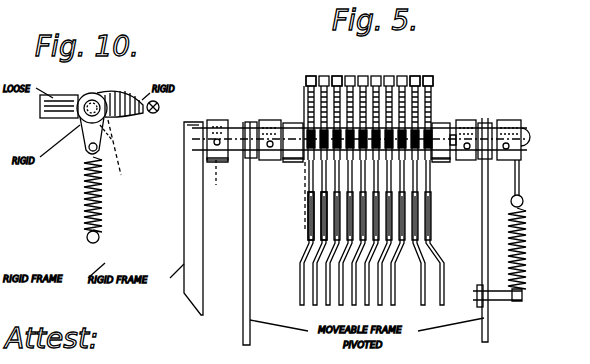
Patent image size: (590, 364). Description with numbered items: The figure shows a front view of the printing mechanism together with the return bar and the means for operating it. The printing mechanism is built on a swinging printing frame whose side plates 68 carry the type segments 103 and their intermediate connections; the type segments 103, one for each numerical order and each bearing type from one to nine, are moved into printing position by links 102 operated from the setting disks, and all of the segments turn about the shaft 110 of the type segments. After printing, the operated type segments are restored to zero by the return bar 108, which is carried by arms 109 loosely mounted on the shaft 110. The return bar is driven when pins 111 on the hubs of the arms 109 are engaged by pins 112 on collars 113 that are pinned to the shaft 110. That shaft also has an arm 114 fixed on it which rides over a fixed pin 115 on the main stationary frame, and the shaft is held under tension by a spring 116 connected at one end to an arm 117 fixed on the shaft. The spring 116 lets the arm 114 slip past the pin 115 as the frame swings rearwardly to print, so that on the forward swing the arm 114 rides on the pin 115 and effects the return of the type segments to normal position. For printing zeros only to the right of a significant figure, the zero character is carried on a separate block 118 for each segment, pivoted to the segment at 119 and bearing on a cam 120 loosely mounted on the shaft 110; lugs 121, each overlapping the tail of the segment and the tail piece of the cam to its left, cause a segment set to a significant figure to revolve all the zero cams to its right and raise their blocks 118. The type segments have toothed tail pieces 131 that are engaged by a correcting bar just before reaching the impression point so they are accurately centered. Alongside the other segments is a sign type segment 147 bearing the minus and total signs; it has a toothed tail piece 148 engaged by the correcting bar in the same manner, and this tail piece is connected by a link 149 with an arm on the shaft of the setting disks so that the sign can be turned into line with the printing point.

In FIG. 5, the side plates 68 is at (248, 241).
In FIG. 5, the links 102 is at (302, 288).
In FIG. 5, the type segments 103 is at (307, 78).
In FIG. 10, the return bar 108 is at (48, 107).
In FIG. 5, the return bar 108 is at (307, 127).
In FIG. 10, the arms 109 is at (68, 113).
In FIG. 5, the arms 109 is at (307, 170).
In FIG. 10, the shaft of the type segments 110 is at (88, 103).
In FIG. 5, the shaft of the type segments 110 is at (494, 133).
In FIG. 10, the pins 111 is at (110, 93).
In FIG. 5, the pins 111 is at (300, 124).
In FIG. 10, the pins 112 is at (127, 157).
In FIG. 5, the pins 112 is at (293, 163).
In FIG. 5, the collars 113 is at (268, 124).
In FIG. 10, the arm 114 is at (120, 114).
In FIG. 5, the arm 114 is at (215, 162).
In FIG. 10, the fixed pin 115 is at (154, 114).
In FIG. 5, the fixed pin 115 is at (217, 120).
In FIG. 10, the spring 116 is at (102, 203).
In FIG. 5, the spring 116 is at (527, 243).
In FIG. 10, the arm 117 is at (82, 143).
In FIG. 5, the arm 117 is at (520, 176).
In FIG. 5, the block 118 is at (323, 78).
In FIG. 5, the pivot 119 is at (343, 78).
In FIG. 5, the cam 120 is at (412, 77).
In FIG. 5, the lugs 121 is at (310, 216).
In FIG. 5, the toothed tail pieces 131 is at (316, 226).
In FIG. 5, the type segment 147 is at (430, 77).
In FIG. 5, the toothed tail piece 148 is at (427, 226).
In FIG. 5, the link 149 is at (430, 240).